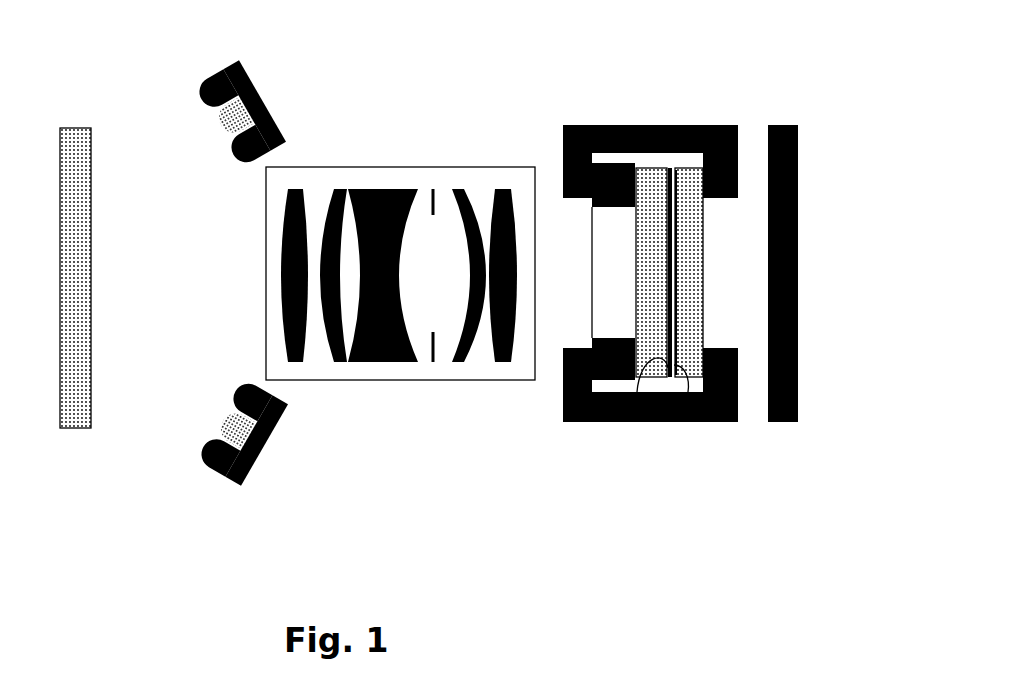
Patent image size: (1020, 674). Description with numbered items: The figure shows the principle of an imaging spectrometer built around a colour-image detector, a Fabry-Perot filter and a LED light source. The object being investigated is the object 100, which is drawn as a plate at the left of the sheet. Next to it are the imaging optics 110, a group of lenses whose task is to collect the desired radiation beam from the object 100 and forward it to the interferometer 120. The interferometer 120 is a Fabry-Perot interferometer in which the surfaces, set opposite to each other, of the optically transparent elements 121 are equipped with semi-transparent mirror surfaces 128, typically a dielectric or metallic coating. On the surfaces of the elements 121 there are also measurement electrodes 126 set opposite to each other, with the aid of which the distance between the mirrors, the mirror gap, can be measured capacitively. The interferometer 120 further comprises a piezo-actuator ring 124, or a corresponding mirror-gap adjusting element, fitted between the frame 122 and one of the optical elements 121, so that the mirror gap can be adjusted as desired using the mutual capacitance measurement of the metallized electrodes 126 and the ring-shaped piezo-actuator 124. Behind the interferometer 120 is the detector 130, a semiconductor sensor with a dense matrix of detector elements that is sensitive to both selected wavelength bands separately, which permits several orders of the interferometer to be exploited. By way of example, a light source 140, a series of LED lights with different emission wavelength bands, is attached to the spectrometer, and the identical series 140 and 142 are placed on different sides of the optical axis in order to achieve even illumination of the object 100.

The object 100 is at (78, 113).
The imaging optics 110 is at (408, 153).
The interferometer 120 is at (638, 93).
The optically transparent elements 121 is at (688, 190).
The frame 122 is at (563, 402).
The piezo-actuator ring 124 is at (607, 372).
The measurement electrodes 126 is at (688, 392).
The semi-transparent mirror surfaces 128 is at (677, 290).
The detector 130 is at (821, 124).
The light source 140 is at (263, 462).
The light source 142 is at (267, 88).